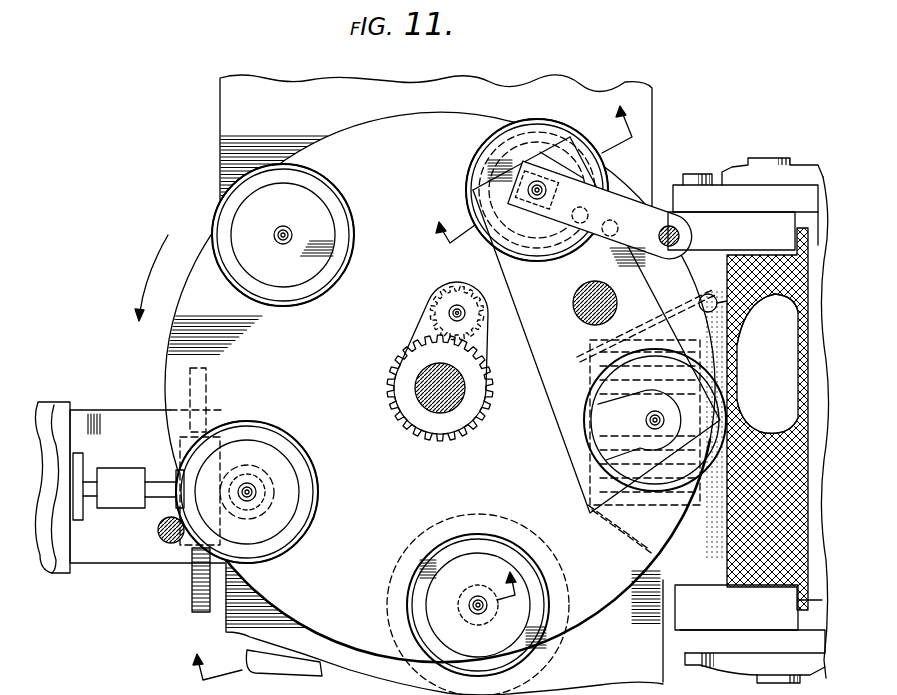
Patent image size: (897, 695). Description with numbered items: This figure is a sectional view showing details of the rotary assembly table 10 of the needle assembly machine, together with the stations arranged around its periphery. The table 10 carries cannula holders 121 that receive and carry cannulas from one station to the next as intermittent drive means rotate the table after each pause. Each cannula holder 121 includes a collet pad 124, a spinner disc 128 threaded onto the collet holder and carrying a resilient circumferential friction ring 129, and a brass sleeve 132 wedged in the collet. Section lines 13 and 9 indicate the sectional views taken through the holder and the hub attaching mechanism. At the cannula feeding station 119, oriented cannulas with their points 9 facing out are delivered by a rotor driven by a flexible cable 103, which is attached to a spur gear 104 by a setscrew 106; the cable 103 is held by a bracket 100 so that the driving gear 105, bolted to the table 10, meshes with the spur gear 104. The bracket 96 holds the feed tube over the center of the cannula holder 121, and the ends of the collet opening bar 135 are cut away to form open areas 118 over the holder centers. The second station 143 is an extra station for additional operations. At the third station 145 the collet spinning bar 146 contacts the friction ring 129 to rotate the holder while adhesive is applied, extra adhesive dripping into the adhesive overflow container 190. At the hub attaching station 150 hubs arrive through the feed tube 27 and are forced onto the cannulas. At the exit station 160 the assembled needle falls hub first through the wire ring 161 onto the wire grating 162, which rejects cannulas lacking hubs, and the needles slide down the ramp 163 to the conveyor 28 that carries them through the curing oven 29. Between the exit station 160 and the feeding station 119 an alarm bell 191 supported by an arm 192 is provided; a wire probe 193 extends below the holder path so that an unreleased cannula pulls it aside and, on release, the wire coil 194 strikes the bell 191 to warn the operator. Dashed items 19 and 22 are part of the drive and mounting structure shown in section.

The rotary assembly table 10 is at (160, 373).
The section line FIG. 13 is at (518, 170).
The points 9 is at (354, 618).
The bracket 19 is at (208, 380).
The rod 22 is at (196, 596).
The feed tube 27 is at (283, 668).
The conveyor 28 is at (763, 268).
The curing oven 29 is at (806, 150).
The bracket 96 is at (613, 212).
The bracket 100 is at (478, 382).
The flexible cable 103 is at (452, 305).
The spur gear 104 is at (430, 318).
The driving gear 105 is at (392, 384).
The setscrew 106 is at (470, 300).
The open areas 118 is at (523, 170).
The cannula feeding station 119 is at (558, 103).
The cannula holder 121 is at (530, 103).
The collet pad 124 is at (303, 195).
The spinner disc 128 is at (283, 303).
The friction ring 129 is at (232, 282).
The brass sleeve 132 is at (292, 234).
The collet opening bar 135 is at (525, 270).
The second station 143 is at (210, 221).
The third station 145 is at (322, 540).
The collet spinning bar 146 is at (170, 543).
The hub attaching station 150 is at (538, 655).
The exit station 160 is at (578, 413).
The wire ring 161 is at (597, 453).
The wire grating 162 is at (618, 432).
The ramp 163 is at (650, 540).
The adhesive overflow container 190 is at (290, 458).
The alarm bell 191 is at (790, 388).
The arm 192 is at (737, 333).
The wire probe 193 is at (575, 360).
The wire coil 194 is at (700, 316).